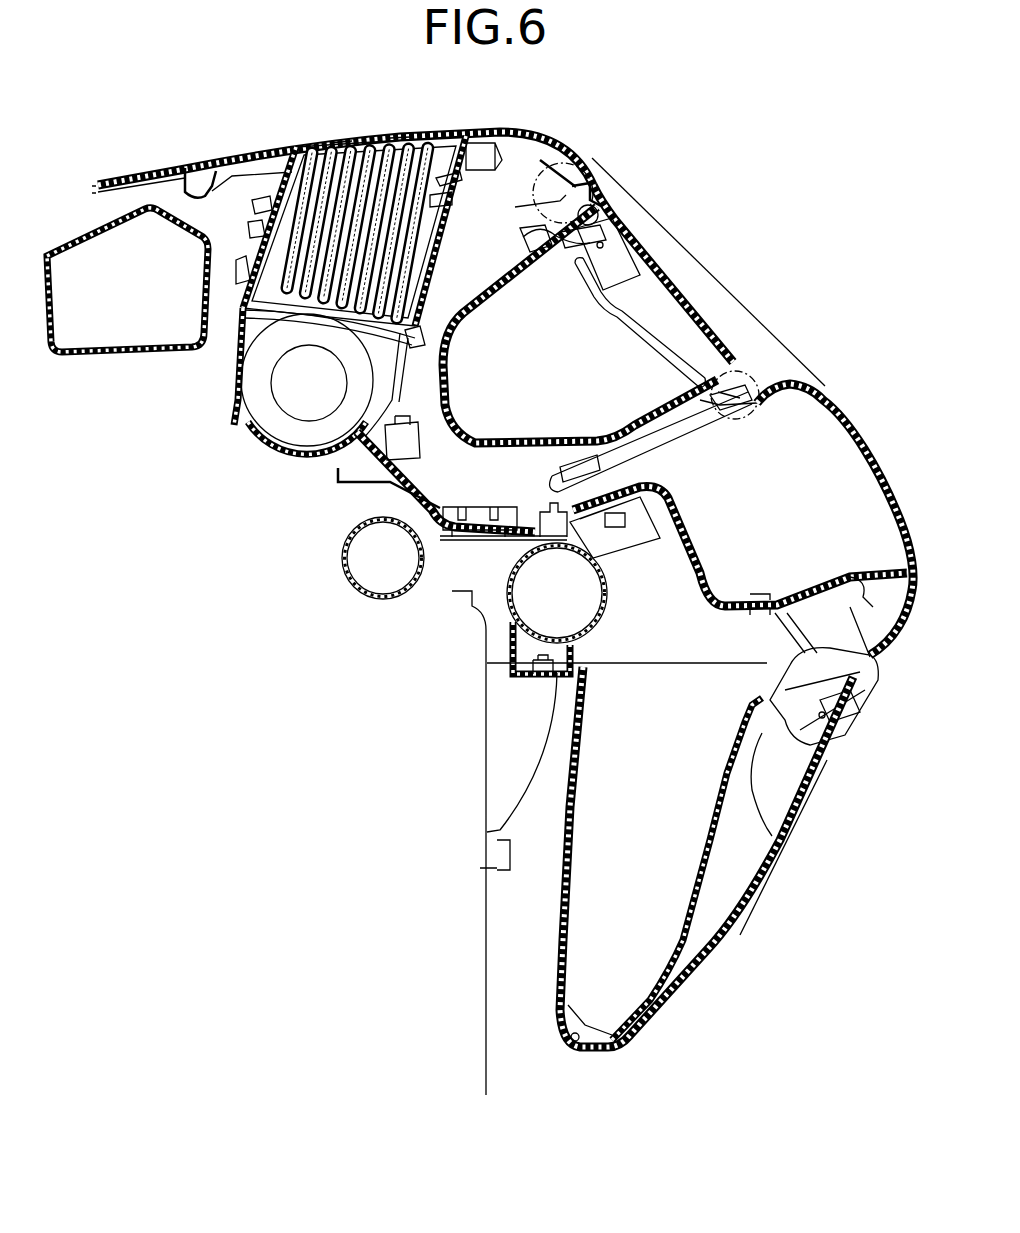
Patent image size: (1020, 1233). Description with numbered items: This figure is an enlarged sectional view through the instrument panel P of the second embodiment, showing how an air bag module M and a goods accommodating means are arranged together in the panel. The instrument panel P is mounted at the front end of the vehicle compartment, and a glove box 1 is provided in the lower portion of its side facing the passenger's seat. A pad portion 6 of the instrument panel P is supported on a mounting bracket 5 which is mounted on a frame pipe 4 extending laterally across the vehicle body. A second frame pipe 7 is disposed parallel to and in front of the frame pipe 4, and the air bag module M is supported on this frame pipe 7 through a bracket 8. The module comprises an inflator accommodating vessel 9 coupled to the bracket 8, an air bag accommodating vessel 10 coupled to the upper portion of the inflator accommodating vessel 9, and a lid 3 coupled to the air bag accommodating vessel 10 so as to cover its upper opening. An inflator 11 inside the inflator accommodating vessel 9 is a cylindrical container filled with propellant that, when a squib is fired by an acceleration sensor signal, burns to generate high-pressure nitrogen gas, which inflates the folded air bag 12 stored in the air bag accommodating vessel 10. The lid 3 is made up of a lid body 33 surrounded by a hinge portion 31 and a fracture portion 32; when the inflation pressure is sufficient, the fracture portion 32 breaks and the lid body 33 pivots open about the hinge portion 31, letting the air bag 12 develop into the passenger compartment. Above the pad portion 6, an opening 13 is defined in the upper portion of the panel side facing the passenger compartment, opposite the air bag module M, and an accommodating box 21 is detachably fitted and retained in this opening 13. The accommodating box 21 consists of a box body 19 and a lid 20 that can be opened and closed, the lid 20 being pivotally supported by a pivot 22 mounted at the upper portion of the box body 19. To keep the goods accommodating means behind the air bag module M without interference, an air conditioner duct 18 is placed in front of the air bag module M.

The glove box 1 is at (772, 890).
The lid 3 is at (239, 147).
The hinge portion 31 is at (296, 147).
The fracture portion 32 is at (462, 135).
The lid body 33 is at (341, 142).
The frame pipe 4 is at (608, 598).
The mounting bracket 5 is at (640, 540).
The pad portion 6 is at (878, 450).
The frame pipe 7 is at (602, 186).
The bracket 8 is at (772, 387).
The inflator accommodating vessel 9 is at (283, 449).
The air bag accommodating vessel 10 is at (426, 257).
The inflator 11 is at (322, 397).
The air bag 12 is at (402, 134).
The opening 13 is at (790, 393).
The duct 18 is at (148, 356).
The box body 19 is at (446, 374).
The lid 20 is at (697, 302).
The accommodating box 21 is at (690, 268).
The pivot 22 is at (582, 283).
The air bag module M is at (250, 436).
The instrument panel P is at (562, 136).